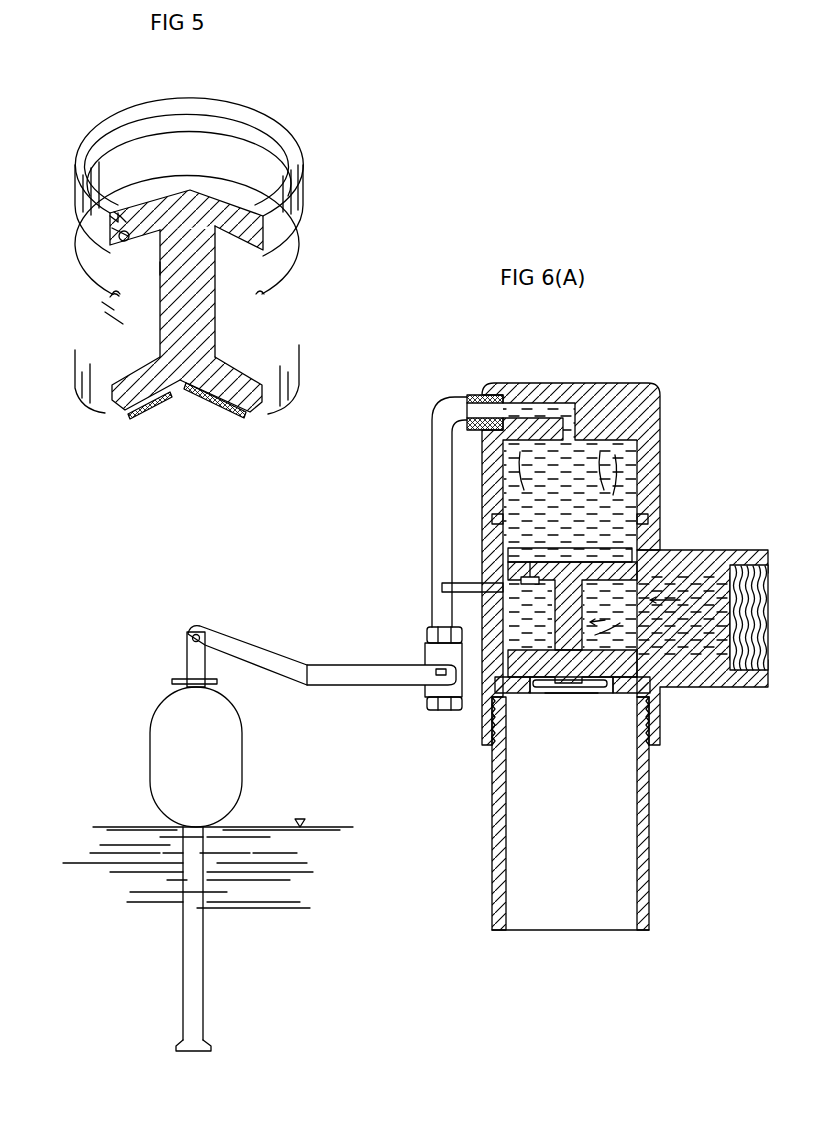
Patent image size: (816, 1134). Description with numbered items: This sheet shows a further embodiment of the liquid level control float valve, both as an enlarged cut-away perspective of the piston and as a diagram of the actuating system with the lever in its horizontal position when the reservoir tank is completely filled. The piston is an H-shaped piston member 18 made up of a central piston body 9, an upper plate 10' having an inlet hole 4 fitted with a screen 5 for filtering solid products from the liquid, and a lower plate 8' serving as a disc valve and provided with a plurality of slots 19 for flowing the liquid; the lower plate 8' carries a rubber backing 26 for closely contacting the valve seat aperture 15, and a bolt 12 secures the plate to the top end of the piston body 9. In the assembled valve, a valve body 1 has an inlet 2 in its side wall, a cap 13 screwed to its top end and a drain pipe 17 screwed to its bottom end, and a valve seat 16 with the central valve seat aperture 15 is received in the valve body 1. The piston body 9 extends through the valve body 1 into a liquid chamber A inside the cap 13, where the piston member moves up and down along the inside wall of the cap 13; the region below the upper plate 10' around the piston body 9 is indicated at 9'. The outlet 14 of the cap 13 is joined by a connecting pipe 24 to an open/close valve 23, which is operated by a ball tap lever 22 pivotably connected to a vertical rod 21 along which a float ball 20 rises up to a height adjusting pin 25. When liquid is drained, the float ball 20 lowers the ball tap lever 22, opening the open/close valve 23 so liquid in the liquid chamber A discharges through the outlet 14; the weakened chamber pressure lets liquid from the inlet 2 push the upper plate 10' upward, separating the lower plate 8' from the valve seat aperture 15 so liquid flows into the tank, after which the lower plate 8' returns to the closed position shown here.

In FIG. 6A, the valve body 1 is at (651, 690).
In FIG. 6A, the inlet 2 is at (722, 603).
In FIG. 5, the inlet hole 4 is at (108, 217).
In FIG. 6A, the inlet hole 4 is at (528, 572).
In FIG. 5, the screen 5 is at (120, 250).
In FIG. 6A, the screen 5 is at (521, 606).
In FIG. 5, the lower plate 8' is at (210, 294).
In FIG. 6A, the lower plate 8' is at (608, 699).
In FIG. 5, the piston body 9 is at (238, 291).
In FIG. 6A, the chamber 9' is at (572, 615).
In FIG. 5, the upper plate 10' is at (216, 177).
In FIG. 6A, the upper plate 10' is at (614, 553).
In FIG. 5, the bolt 12 is at (178, 395).
In FIG. 6A, the cap 13 is at (628, 395).
In FIG. 6A, the outlet 14 is at (548, 408).
In FIG. 6A, the valve seat aperture 15 is at (572, 696).
In FIG. 6A, the valve seat 16 is at (516, 700).
In FIG. 6A, the drain pipe 17 is at (498, 822).
In FIG. 5, the H-shaped piston member 18 is at (152, 269).
In FIG. 6A, the H-shaped piston member 18 is at (612, 547).
In FIG. 5, the slots 19 is at (108, 300).
In FIG. 6A, the slots 19 is at (497, 692).
In FIG. 6A, the float ball 20 is at (160, 758).
In FIG. 6A, the vertical rod 21 is at (195, 1000).
In FIG. 6A, the ball tap lever 22 is at (276, 660).
In FIG. 6A, the open/close valve 23 is at (442, 700).
In FIG. 6A, the connecting pipe 24 is at (443, 500).
In FIG. 6A, the height adjusting pin 25 is at (186, 683).
In FIG. 5, the rubber backing 26 is at (148, 410).
In FIG. 6A, the liquid chamber A is at (578, 470).